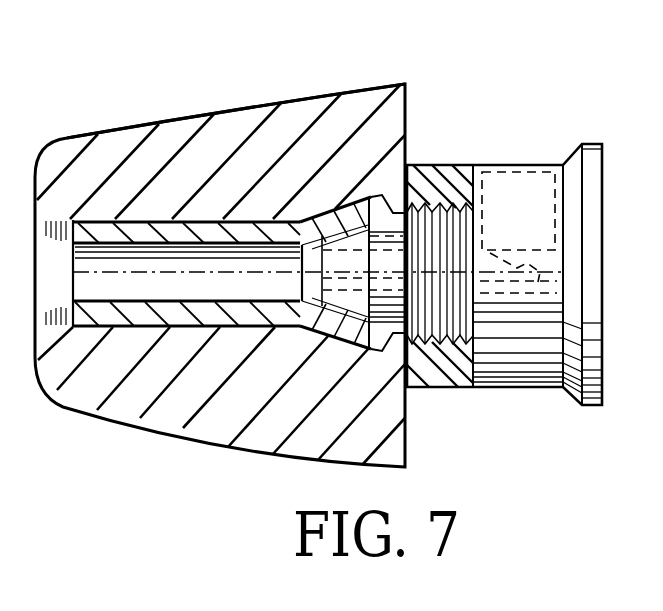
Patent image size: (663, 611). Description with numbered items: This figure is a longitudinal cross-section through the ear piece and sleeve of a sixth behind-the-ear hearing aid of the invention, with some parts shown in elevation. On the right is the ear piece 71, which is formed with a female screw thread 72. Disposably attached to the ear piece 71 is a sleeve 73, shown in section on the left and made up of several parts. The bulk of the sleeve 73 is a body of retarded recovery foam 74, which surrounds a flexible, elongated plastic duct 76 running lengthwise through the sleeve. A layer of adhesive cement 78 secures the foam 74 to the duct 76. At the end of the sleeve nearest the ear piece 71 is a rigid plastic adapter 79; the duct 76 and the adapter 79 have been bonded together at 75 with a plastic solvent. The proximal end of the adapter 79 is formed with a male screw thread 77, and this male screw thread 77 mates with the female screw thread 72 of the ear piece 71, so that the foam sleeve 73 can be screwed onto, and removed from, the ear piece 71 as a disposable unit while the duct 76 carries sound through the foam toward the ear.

The ear piece 71 is at (543, 384).
The female screw thread 72 is at (461, 200).
The sleeve 73 is at (283, 101).
The retarded recovery foam 74 is at (183, 135).
The bond 75 is at (351, 203).
The flexible, elongated plastic duct 76 is at (112, 227).
The male screw thread 77 is at (456, 382).
The layer of adhesive cement 78 is at (120, 328).
The rigid plastic adapter 79 is at (385, 193).